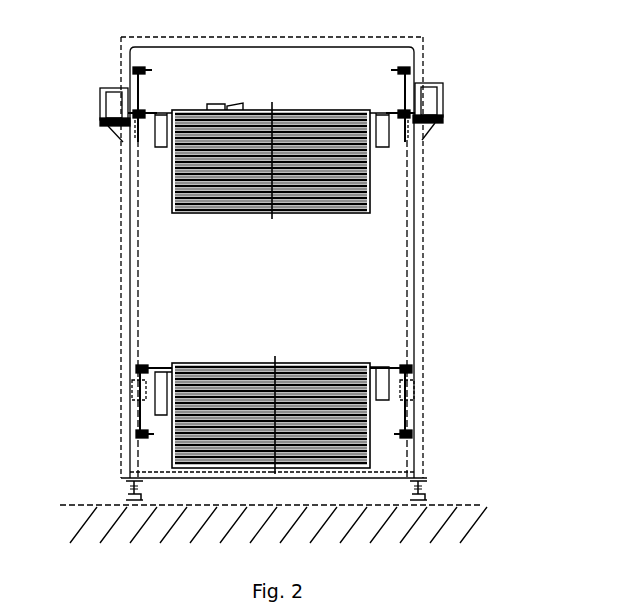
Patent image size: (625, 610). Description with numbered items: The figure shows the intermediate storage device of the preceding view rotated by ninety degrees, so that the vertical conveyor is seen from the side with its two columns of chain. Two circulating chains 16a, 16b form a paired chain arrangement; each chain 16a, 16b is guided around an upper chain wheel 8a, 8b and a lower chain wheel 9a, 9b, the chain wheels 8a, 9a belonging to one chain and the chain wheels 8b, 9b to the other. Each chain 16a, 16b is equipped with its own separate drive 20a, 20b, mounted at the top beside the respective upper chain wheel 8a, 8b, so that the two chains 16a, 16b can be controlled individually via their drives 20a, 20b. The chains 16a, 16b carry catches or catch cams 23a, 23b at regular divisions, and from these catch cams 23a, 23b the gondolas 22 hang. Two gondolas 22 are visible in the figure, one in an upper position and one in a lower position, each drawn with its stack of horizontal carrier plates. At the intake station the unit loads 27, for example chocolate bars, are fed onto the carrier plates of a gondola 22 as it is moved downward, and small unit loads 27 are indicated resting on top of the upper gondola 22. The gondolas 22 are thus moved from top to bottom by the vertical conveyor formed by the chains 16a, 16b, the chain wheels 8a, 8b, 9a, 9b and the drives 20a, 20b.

The chain wheel 8a is at (400, 78).
The chain wheel 8b is at (134, 93).
The chain wheel 9a is at (408, 422).
The chain wheel 9b is at (140, 428).
The chain 16a is at (408, 255).
The chain 16b is at (136, 250).
The drive 20a is at (426, 100).
The drive 20b is at (113, 100).
The gondola 22 is at (298, 205).
The catch cam 23a is at (400, 438).
The catch cam 23b is at (148, 438).
The unit load 27 is at (193, 104).